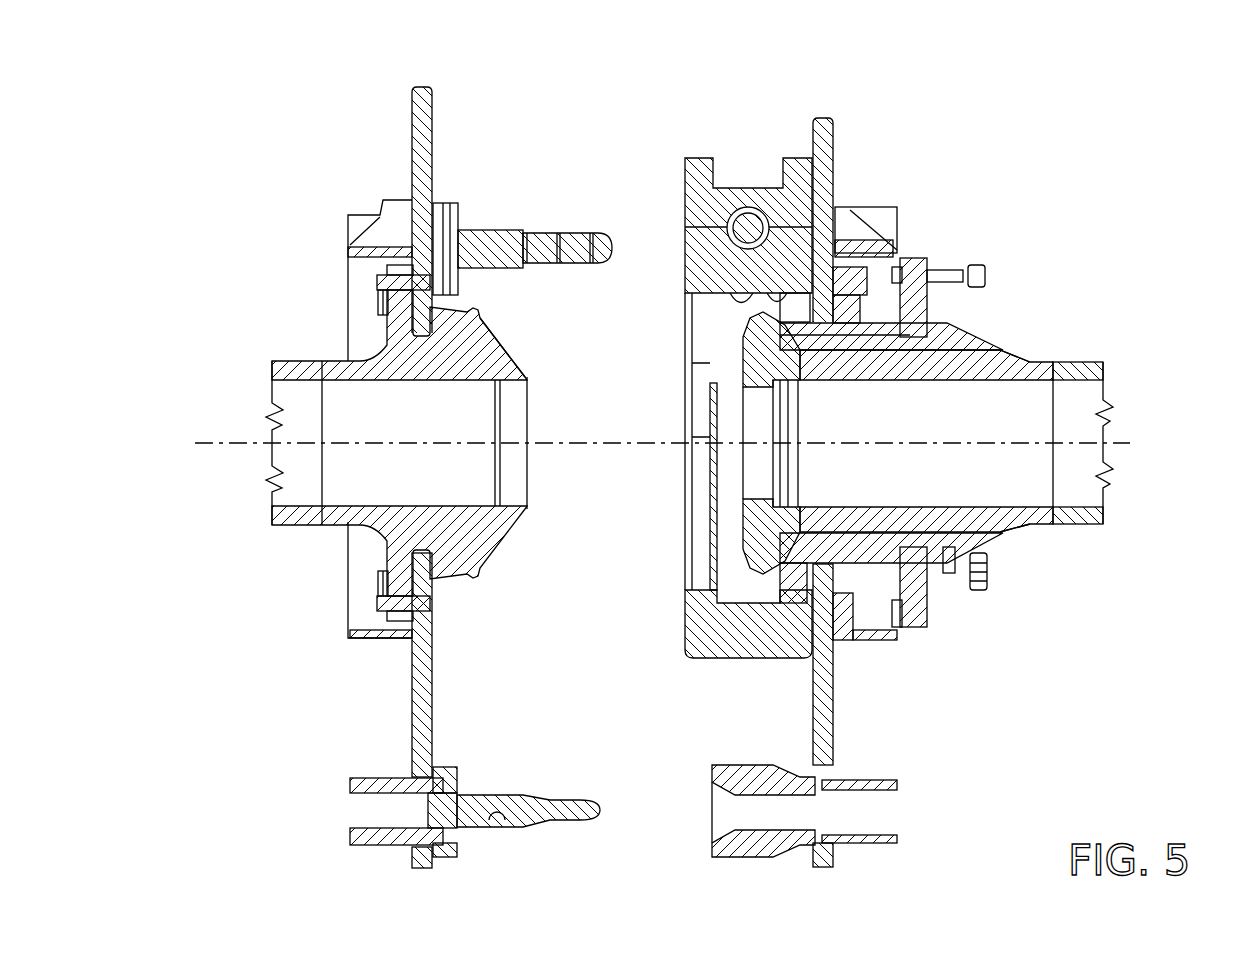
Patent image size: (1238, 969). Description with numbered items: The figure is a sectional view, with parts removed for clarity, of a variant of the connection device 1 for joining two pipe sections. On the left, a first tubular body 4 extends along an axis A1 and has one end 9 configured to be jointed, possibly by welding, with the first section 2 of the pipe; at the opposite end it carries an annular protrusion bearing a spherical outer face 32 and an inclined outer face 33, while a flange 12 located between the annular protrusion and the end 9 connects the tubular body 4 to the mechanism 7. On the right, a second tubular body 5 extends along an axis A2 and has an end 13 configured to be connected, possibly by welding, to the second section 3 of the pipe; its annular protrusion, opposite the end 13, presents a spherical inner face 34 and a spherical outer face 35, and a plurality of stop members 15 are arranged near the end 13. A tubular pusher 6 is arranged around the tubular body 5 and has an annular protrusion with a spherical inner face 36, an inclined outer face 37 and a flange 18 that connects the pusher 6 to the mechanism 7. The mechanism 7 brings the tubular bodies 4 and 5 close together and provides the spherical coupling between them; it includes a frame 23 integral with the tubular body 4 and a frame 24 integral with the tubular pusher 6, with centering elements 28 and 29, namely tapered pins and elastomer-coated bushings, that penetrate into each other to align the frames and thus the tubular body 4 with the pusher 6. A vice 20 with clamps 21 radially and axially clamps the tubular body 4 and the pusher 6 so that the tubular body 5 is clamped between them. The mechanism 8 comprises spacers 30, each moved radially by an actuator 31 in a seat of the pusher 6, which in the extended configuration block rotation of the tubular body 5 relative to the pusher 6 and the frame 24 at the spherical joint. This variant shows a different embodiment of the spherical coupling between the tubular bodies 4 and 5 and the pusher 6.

The connection device 1 is at (1108, 150).
The first section of the pipe 2 is at (293, 517).
The second section of the pipe 3 is at (1080, 520).
The first tubular body 4 is at (390, 530).
The second tubular body 5 is at (1010, 520).
The tubular pusher 6 is at (860, 355).
The mechanism 7 is at (815, 78).
The mechanism 8 is at (975, 240).
The end 9 is at (275, 360).
The flange 12 is at (397, 330).
The end 13 is at (1063, 370).
The stop members 15 is at (972, 337).
The flange 18 is at (853, 640).
The vice 20 is at (737, 170).
The clamps 21 is at (690, 273).
The frame 23 is at (427, 147).
The frame 24 is at (835, 135).
The centering elements 28 is at (517, 233).
The centering elements 29 is at (760, 857).
The spacers 30 is at (935, 268).
The actuator 31 is at (950, 283).
The spherical outer face 32 is at (505, 332).
The inclined outer face 33 is at (450, 312).
The spherical inner face 34 is at (717, 383).
The spherical outer face 35 is at (777, 320).
The spherical inner face 36 is at (757, 540).
The inclined outer face 37 is at (795, 575).
The axis A1 is at (207, 443).
The axis A2 is at (1128, 440).